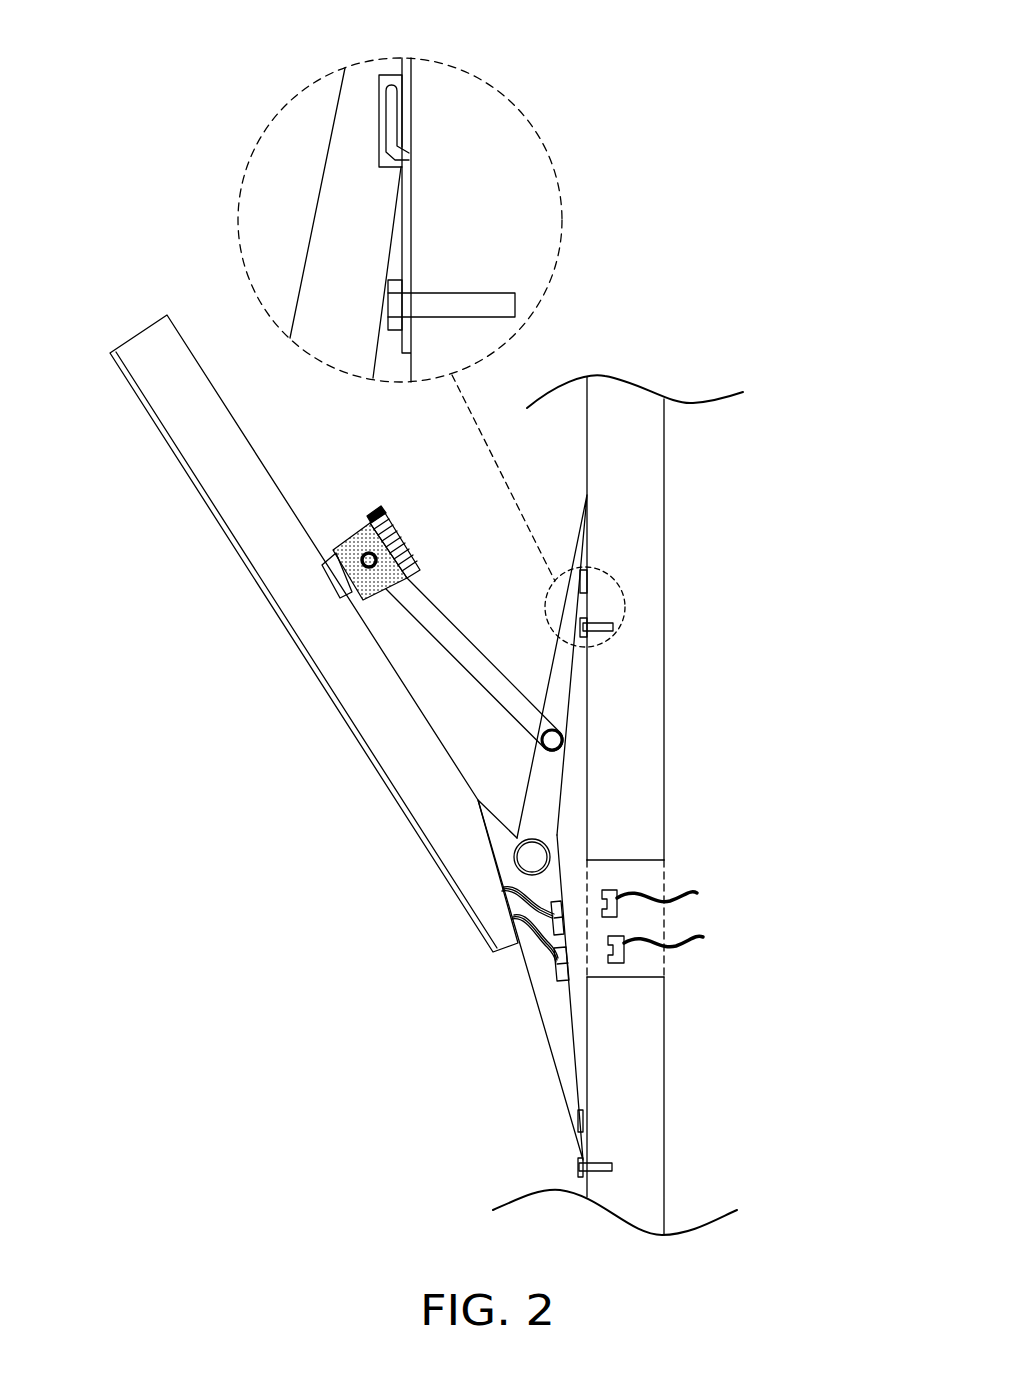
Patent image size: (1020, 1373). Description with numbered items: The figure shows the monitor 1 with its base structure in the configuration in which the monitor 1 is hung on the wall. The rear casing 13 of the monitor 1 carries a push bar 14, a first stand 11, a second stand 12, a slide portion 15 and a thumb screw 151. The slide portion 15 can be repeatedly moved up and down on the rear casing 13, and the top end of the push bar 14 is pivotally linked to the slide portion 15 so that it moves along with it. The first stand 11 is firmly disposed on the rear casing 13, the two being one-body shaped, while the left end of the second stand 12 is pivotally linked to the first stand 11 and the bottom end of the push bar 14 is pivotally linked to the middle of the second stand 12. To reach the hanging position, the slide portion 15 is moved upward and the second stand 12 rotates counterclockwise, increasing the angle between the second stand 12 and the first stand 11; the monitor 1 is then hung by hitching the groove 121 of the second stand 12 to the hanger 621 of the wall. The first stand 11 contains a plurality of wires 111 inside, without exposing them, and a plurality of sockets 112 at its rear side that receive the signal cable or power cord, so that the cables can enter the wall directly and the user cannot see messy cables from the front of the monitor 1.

The monitor 1 is at (892, 1160).
The first stand 11 is at (572, 1083).
The wires 111 is at (538, 947).
The sockets 112 is at (563, 972).
The second stand 12 is at (348, 217).
The groove 121 is at (390, 56).
The rear casing 13 is at (205, 440).
The push bar 14 is at (445, 630).
The slide portion 15 is at (333, 570).
The thumb screw 151 is at (437, 528).
The hanger 621 is at (392, 113).